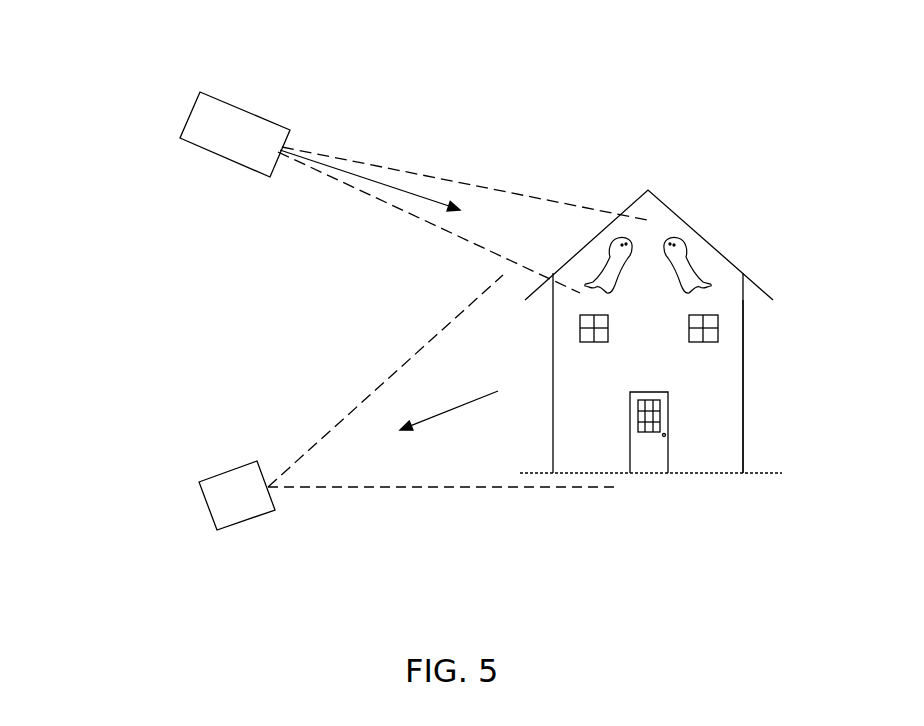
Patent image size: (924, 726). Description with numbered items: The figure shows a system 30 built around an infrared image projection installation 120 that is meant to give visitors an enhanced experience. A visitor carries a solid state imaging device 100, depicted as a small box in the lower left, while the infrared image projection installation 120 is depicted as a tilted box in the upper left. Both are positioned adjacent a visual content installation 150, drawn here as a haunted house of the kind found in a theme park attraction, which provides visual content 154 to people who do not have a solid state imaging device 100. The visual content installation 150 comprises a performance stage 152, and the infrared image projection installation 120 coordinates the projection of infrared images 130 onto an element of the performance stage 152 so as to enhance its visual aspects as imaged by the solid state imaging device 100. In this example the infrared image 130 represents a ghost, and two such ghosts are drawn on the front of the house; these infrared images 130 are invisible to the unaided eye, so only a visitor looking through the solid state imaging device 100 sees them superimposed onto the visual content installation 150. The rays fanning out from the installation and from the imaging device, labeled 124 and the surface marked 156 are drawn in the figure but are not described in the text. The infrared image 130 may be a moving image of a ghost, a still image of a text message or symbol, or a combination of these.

The system 30 is at (130, 312).
The solid state imaging device 100 is at (247, 522).
The infrared image projection installation 120 is at (223, 98).
The projected light 124 is at (415, 197).
The infrared image 130 is at (612, 240).
The visual content installation 150 is at (772, 489).
The performance stage 152 is at (818, 453).
The visual content 154 is at (743, 353).
The projection surface 156 is at (743, 408).